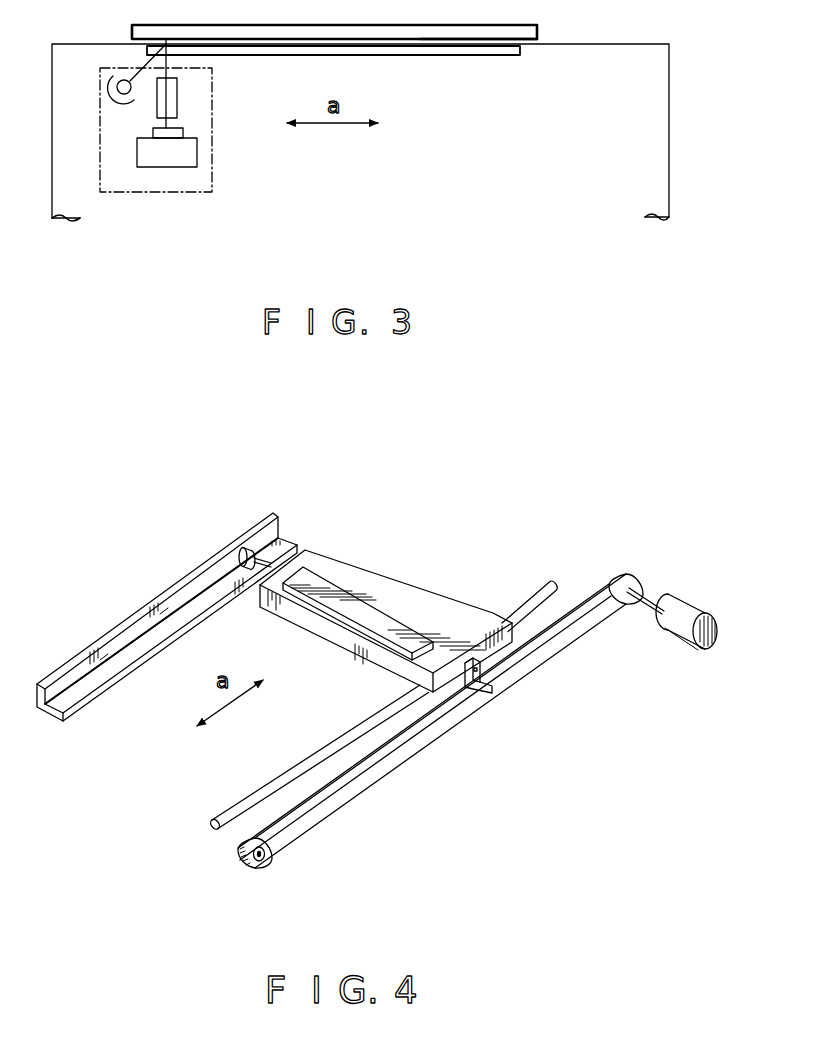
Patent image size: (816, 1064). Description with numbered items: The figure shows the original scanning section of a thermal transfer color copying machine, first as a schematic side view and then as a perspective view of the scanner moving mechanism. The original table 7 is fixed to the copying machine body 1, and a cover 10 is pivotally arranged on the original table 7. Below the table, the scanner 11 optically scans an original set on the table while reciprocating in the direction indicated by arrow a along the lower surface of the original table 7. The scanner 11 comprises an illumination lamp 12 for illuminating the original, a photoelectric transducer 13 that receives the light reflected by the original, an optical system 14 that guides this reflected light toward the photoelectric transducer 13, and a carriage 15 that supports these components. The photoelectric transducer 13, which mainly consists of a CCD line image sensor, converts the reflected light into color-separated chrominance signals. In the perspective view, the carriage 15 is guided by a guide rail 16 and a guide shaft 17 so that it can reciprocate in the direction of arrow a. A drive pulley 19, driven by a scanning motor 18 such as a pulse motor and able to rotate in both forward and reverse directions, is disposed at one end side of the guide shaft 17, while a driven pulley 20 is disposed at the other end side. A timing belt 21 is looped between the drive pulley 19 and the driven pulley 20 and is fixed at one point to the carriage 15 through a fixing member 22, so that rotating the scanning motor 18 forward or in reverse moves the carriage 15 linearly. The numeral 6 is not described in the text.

In FIG. 3, the copying machine body 1 is at (658, 100).
In FIG. 3, the measuring plate 6 is at (348, 41).
In FIG. 3, the original table 7 is at (447, 57).
In FIG. 3, the cover 10 is at (497, 33).
In FIG. 3, the scanner 11 is at (160, 192).
In FIG. 3, the illumination lamp 12 is at (113, 92).
In FIG. 3, the photoelectric transducer 13 is at (185, 132).
In FIG. 4, the photoelectric transducer 13 is at (325, 583).
In FIG. 3, the optical system 14 is at (177, 97).
In FIG. 3, the carriage 15 is at (190, 167).
In FIG. 4, the carriage 15 is at (398, 607).
In FIG. 4, the guide rail 16 is at (195, 569).
In FIG. 4, the guide shaft 17 is at (522, 603).
In FIG. 4, the scanning motor 18 is at (662, 628).
In FIG. 4, the drive pulley 19 is at (633, 582).
In FIG. 4, the driven pulley 20 is at (266, 860).
In FIG. 4, the timing belt 21 is at (400, 763).
In FIG. 4, the fixing member 22 is at (488, 692).